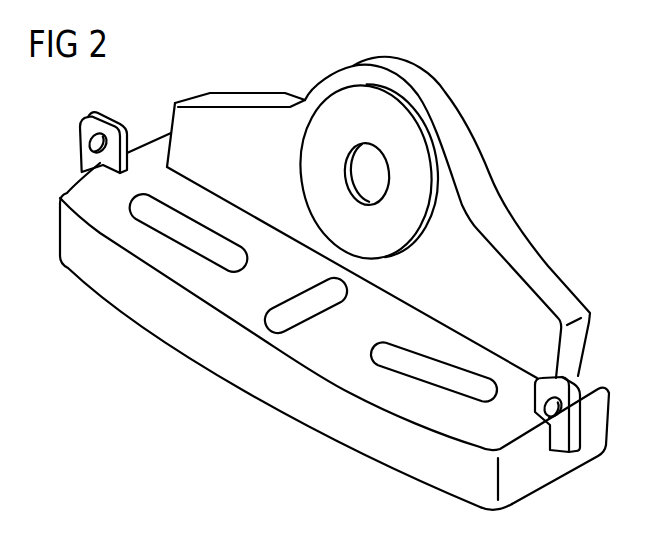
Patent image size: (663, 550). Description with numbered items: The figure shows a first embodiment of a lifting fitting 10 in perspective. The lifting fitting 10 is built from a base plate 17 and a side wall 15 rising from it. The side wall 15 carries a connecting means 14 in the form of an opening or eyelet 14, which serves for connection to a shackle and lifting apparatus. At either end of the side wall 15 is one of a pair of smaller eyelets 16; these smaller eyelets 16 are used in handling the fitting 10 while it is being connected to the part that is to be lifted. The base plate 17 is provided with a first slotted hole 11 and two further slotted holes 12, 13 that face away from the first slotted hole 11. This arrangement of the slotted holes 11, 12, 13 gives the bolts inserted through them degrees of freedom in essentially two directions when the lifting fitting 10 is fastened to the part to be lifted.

The lifting fitting 10 is at (527, 149).
The first slotted hole 11 is at (297, 310).
The further slotted hole 12 is at (157, 215).
The further slotted hole 13 is at (380, 358).
The connecting means 14 is at (370, 180).
The side wall 15 is at (513, 246).
The smaller eyelets 16 is at (82, 153).
The base plate 17 is at (283, 392).